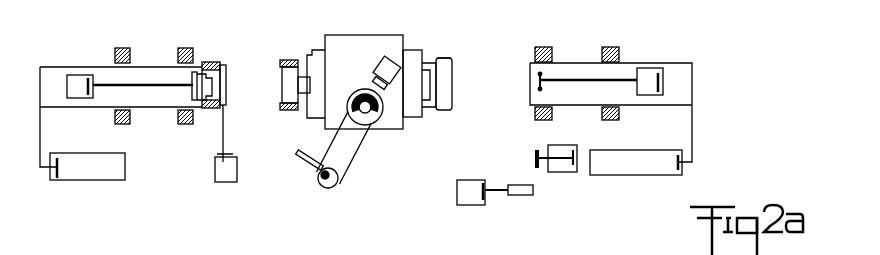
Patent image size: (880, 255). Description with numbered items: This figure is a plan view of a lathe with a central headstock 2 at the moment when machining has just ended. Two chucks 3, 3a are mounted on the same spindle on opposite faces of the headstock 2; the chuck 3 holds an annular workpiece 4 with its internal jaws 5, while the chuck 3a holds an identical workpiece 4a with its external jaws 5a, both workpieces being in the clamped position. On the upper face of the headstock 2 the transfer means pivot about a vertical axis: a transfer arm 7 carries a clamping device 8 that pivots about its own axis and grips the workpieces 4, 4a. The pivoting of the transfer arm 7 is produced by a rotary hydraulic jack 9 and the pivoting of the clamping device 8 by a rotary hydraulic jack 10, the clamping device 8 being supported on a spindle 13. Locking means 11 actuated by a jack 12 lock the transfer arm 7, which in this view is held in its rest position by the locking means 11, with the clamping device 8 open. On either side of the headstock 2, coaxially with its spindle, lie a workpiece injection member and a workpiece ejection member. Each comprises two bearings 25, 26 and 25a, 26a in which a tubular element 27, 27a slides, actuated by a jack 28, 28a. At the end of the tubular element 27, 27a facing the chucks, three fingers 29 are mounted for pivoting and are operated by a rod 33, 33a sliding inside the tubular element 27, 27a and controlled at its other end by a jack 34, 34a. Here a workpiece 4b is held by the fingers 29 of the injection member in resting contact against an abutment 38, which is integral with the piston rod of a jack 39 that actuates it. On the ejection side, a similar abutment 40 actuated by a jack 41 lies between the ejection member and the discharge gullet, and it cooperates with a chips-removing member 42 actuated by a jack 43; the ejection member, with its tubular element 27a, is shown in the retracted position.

The headstock 2 is at (349, 52).
The chuck 3 is at (313, 54).
The chuck 3a is at (411, 57).
The annular workpiece 4 is at (290, 62).
The workpiece 4a is at (441, 81).
The workpiece 4b is at (207, 62).
The internal jaws 5 is at (282, 68).
The external jaws 5a is at (440, 53).
The transfer arm 7 is at (347, 160).
The clamping device 8 is at (300, 166).
The rotary hydraulic jack 9 is at (374, 112).
The rotary hydraulic jack 10 is at (345, 178).
The locking means 11 is at (378, 85).
The jack 12 is at (388, 60).
The spindle 13 is at (328, 183).
The bearing 25 is at (186, 50).
The bearing 25a is at (550, 47).
The bearing 26 is at (117, 50).
The bearing 26a is at (615, 48).
The tubular element 27 is at (67, 66).
The tubular element 27a is at (649, 63).
The jack 28 is at (82, 170).
The jack 28a is at (637, 176).
The fingers 29 is at (226, 97).
The rod 33 is at (143, 84).
The rod 33a is at (603, 85).
The jack 34 is at (75, 95).
The jack 34a is at (652, 70).
The abutment 38 is at (223, 76).
The jack 39 is at (215, 176).
The abutment 40 is at (517, 196).
The jack 41 is at (466, 198).
The chips-removing member 42 is at (535, 157).
The jack 43 is at (563, 172).